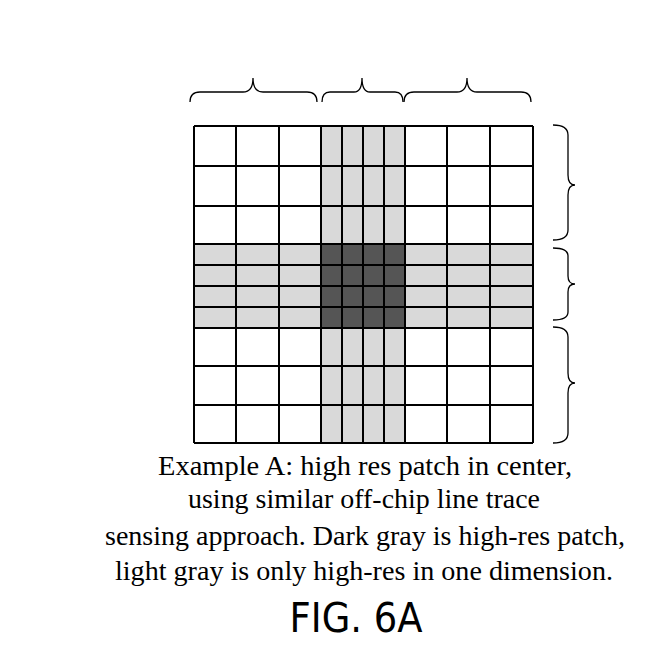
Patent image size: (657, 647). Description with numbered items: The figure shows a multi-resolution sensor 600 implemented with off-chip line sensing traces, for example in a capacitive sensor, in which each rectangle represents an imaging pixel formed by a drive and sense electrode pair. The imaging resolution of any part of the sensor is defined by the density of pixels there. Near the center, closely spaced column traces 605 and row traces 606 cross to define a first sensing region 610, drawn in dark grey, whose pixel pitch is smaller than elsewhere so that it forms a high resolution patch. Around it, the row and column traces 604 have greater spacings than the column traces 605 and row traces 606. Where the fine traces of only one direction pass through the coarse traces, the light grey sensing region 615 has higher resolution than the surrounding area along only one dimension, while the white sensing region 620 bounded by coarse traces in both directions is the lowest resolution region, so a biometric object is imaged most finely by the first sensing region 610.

The multi-resolution sensor 600 is at (329, 232).
The row and column traces 604 is at (408, 244).
The column traces 605 is at (362, 74).
The row traces 606 is at (589, 284).
The first sensing region 610 is at (337, 290).
The sensing region 615 is at (209, 281).
The sensing region 620 is at (209, 183).